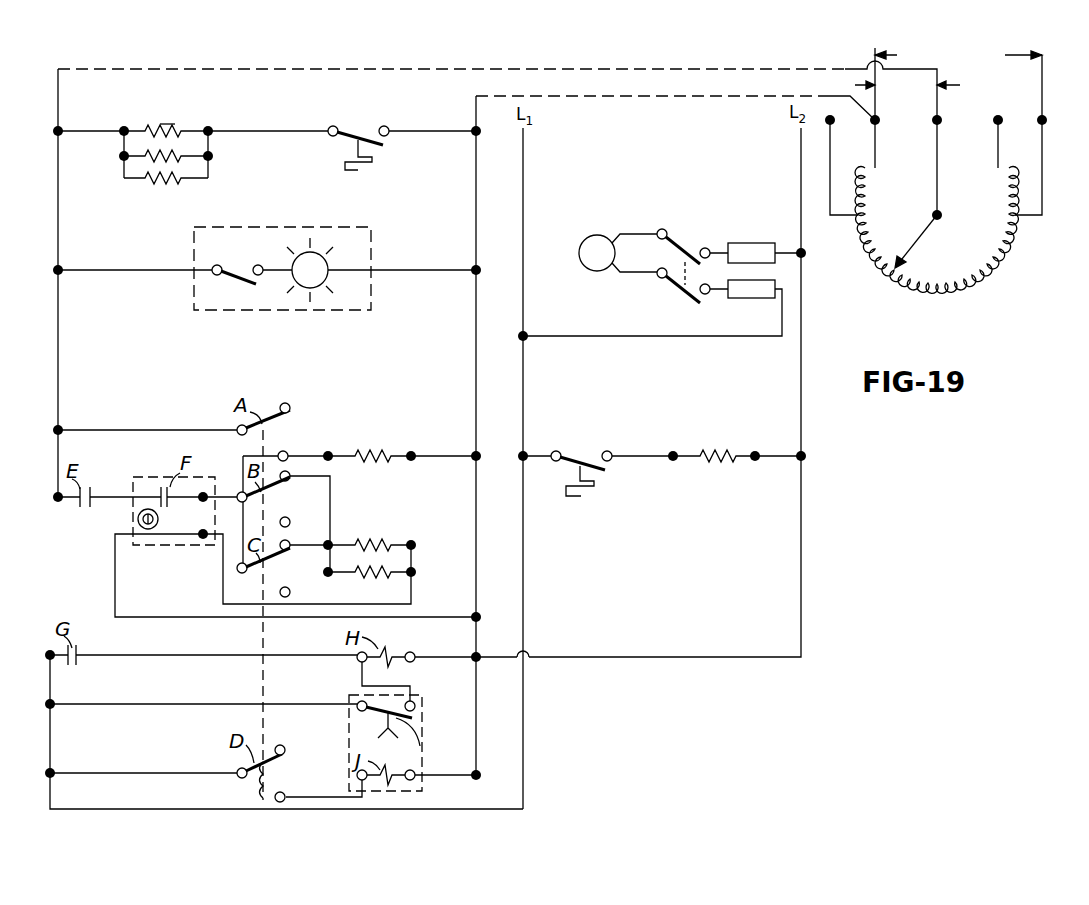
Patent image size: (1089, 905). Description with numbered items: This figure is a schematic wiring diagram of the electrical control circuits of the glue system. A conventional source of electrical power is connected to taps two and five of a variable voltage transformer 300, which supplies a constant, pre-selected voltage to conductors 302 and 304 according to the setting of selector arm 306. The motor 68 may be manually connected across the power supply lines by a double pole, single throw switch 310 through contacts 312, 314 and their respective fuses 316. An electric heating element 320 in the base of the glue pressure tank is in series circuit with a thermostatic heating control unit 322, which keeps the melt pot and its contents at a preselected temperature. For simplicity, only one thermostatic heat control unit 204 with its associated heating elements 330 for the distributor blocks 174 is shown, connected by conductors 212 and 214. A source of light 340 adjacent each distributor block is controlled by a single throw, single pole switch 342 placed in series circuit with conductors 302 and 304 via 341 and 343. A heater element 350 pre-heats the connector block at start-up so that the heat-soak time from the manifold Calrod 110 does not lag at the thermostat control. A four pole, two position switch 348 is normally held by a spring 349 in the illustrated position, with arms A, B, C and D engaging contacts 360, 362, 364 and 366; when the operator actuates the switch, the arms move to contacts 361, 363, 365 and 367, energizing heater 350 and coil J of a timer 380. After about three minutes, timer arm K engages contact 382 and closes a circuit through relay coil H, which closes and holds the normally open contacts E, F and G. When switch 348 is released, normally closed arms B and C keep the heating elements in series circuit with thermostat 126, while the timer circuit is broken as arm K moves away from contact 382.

The motor 68 is at (587, 236).
The manifold Calrod 110 is at (374, 540).
The thermostat 126 is at (152, 470).
The distributor block 174 is at (169, 133).
The thermostatic heat control unit 204 is at (362, 130).
The conductor 212 is at (94, 128).
The conductor 214 is at (288, 129).
The variable voltage transformer 300 is at (991, 278).
The conductor 302 is at (737, 69).
The conductor 304 is at (735, 100).
The selector arm 306 is at (922, 233).
The double pole, single throw switch 310 is at (667, 290).
The contact 312 is at (700, 246).
The contact 314 is at (706, 304).
The fuse 316 is at (751, 242).
The electric heating element 320 is at (714, 468).
The thermostatic heating control unit 322 is at (589, 446).
The heating element 330 is at (175, 152).
The source of light 340 is at (311, 253).
The conductor 341 is at (150, 268).
The single throw, single pole switch 342 is at (237, 268).
The conductor 343 is at (432, 266).
The four pole, two position switch 348 is at (258, 636).
The spring 349 is at (255, 784).
The heater element 350 is at (390, 464).
The contact 360 is at (288, 401).
The contact 361 is at (286, 450).
The contact 362 is at (292, 468).
The contact 363 is at (297, 506).
The contact 364 is at (298, 532).
The contact 365 is at (291, 592).
The contact 366 is at (293, 735).
The contact 367 is at (285, 792).
The timer 380 is at (426, 725).
The contact 382 is at (418, 702).